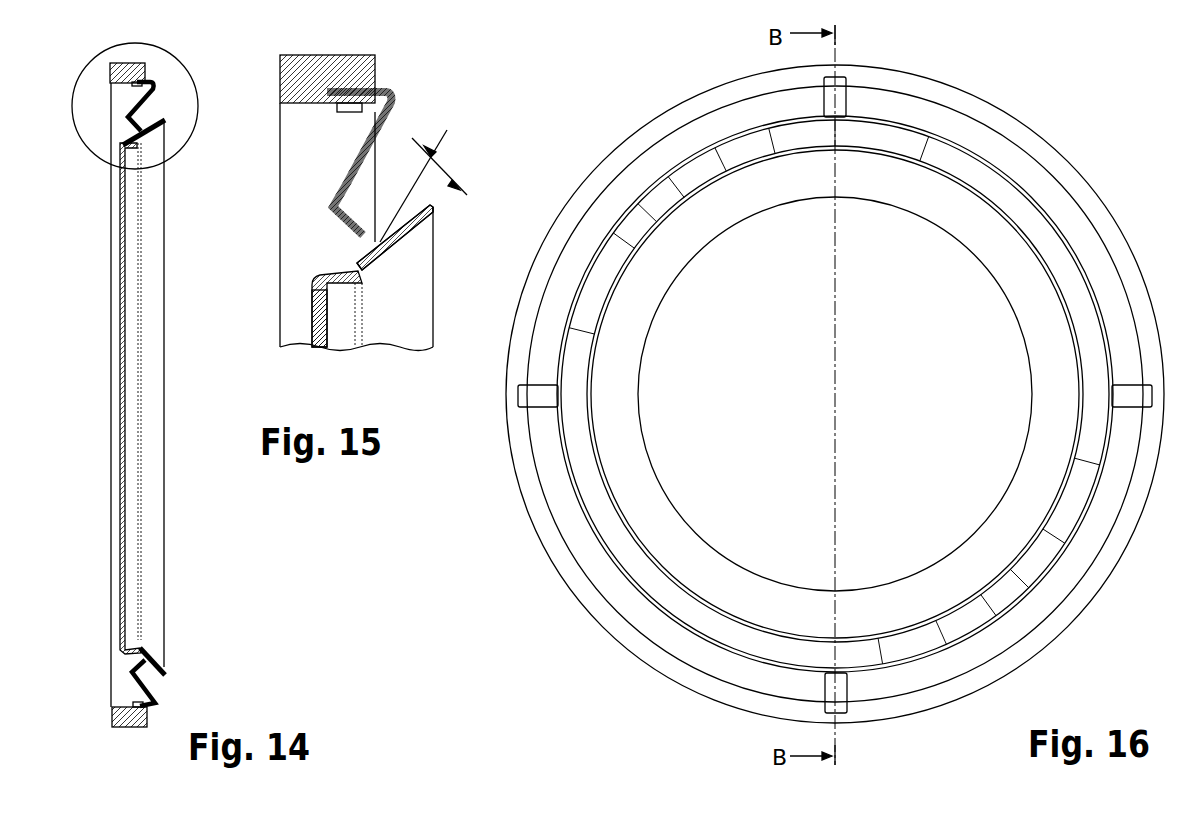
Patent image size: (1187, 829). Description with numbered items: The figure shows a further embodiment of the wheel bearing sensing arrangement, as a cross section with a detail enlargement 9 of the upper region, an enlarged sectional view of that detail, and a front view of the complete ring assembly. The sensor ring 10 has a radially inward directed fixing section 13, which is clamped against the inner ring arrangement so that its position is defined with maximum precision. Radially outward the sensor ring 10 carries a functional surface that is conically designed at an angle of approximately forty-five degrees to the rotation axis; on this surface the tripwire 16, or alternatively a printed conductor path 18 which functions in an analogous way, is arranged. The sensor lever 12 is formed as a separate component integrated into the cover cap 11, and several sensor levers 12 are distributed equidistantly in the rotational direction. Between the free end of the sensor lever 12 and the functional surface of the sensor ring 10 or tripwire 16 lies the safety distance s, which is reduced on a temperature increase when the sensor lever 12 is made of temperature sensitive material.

In FIG. 14, the detail circle 9 is at (175, 60).
In FIG. 14, the sensor ring 10 is at (112, 153).
In FIG. 15, the sensor ring 10 is at (312, 266).
In FIG. 16, the sensor ring 10 is at (700, 247).
In FIG. 14, the cover cap 11 is at (122, 63).
In FIG. 15, the cover cap 11 is at (355, 63).
In FIG. 16, the cover cap 11 is at (933, 87).
In FIG. 14, the sensor lever 12 is at (143, 112).
In FIG. 15, the sensor lever 12 is at (343, 175).
In FIG. 16, the sensor lever 12 is at (828, 98).
In FIG. 14, the fixing section 13 is at (122, 185).
In FIG. 15, the fixing section 13 is at (313, 325).
In FIG. 16, the fixing section 13 is at (642, 323).
In FIG. 15, the tripwire 16 is at (415, 220).
In FIG. 15, the printed conductor path 18 is at (395, 237).
In FIG. 15, the safety distance s is at (447, 158).